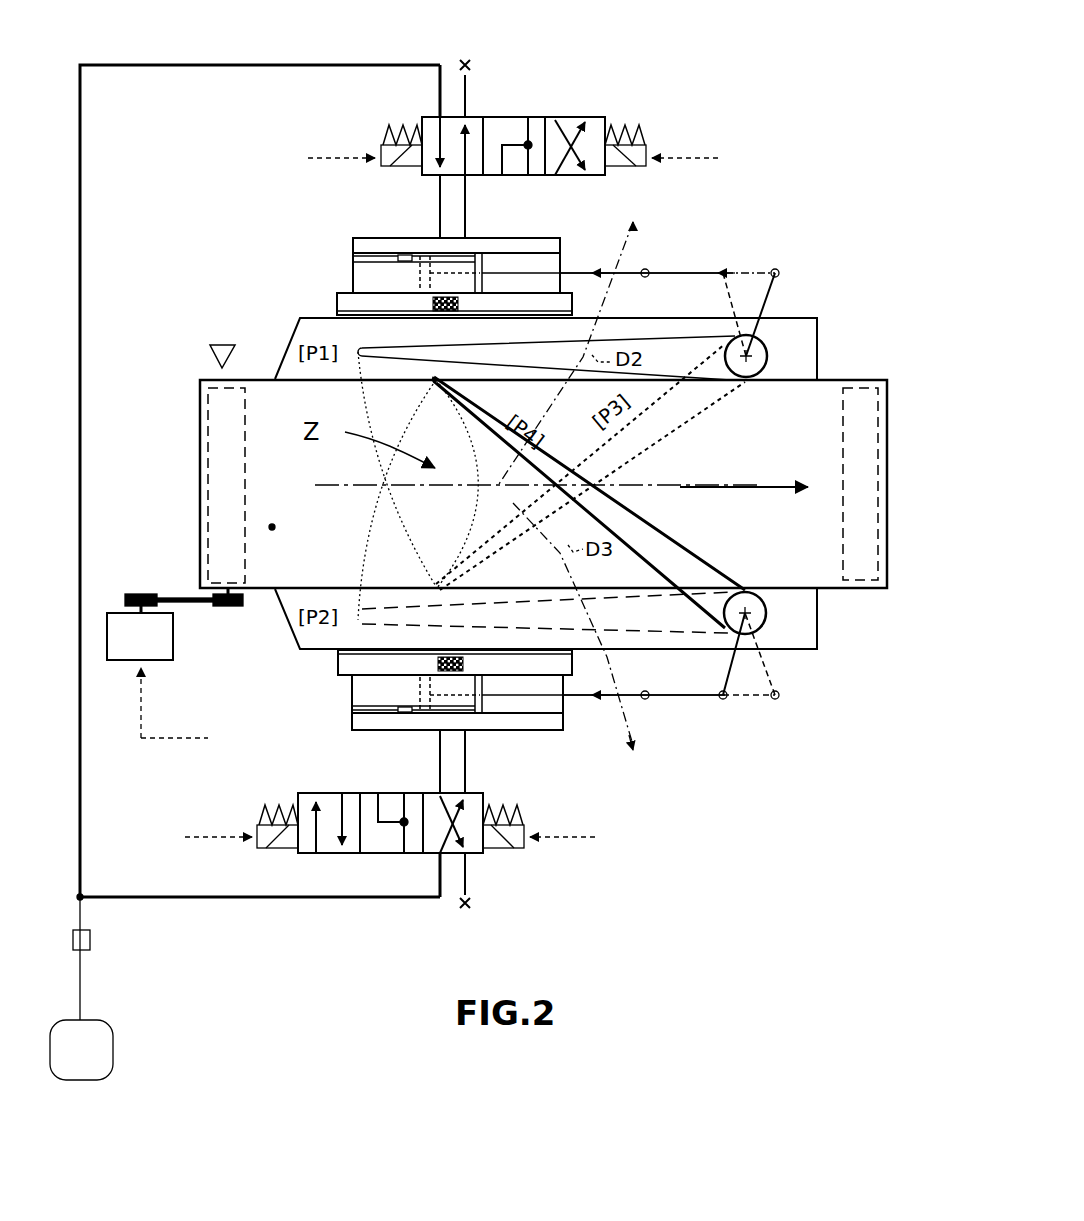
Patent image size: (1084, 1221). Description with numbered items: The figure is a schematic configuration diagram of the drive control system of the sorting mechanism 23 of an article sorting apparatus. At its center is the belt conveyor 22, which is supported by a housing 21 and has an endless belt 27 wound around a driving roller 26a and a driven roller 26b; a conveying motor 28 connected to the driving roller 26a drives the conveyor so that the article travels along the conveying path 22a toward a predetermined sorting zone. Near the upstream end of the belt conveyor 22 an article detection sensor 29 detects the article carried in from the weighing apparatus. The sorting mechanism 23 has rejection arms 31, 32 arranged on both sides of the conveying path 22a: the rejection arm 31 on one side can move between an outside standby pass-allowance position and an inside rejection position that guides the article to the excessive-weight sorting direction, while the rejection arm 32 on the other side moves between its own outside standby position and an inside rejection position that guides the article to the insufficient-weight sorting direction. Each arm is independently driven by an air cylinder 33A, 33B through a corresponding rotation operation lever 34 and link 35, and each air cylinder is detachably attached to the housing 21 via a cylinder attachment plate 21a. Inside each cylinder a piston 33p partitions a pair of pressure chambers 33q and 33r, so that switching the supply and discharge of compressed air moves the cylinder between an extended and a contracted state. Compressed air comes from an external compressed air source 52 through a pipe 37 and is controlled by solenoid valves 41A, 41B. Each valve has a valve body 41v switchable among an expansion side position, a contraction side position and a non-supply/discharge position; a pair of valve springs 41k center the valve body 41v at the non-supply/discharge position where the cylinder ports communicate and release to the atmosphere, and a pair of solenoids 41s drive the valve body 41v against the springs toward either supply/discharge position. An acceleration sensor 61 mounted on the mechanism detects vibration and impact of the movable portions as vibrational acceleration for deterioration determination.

The pipe 37 is at (84, 120).
The external compressed air source 52 is at (95, 1064).
The solenoid valve 41A is at (595, 85).
The solenoid valve 41B is at (525, 868).
The valve spring 41k is at (393, 130).
The solenoid 41s is at (394, 167).
The valve body 41v is at (530, 117).
The air cylinder 33A is at (562, 263).
The air cylinder 33B is at (565, 707).
The piston 33p is at (428, 254).
The pressure chamber 33q is at (353, 272).
The pressure chamber 33r is at (527, 256).
The acceleration sensor 61 is at (430, 302).
The cylinder attachment plate 21a is at (337, 298).
The housing 21 is at (818, 350).
The endless belt 27 is at (832, 578).
The belt conveyor 22 is at (888, 421).
The conveying path 22a is at (270, 527).
The driving roller 26a is at (205, 462).
The driven roller 26b is at (882, 485).
The article detection sensor 29 is at (218, 345).
The rejection arm 31 is at (658, 335).
The rejection arm 32 is at (707, 560).
The rotation operation lever 34 is at (758, 335).
The link 35 is at (705, 272).
The sorting mechanism 23 is at (808, 295).
The conveying motor 28 is at (107, 628).